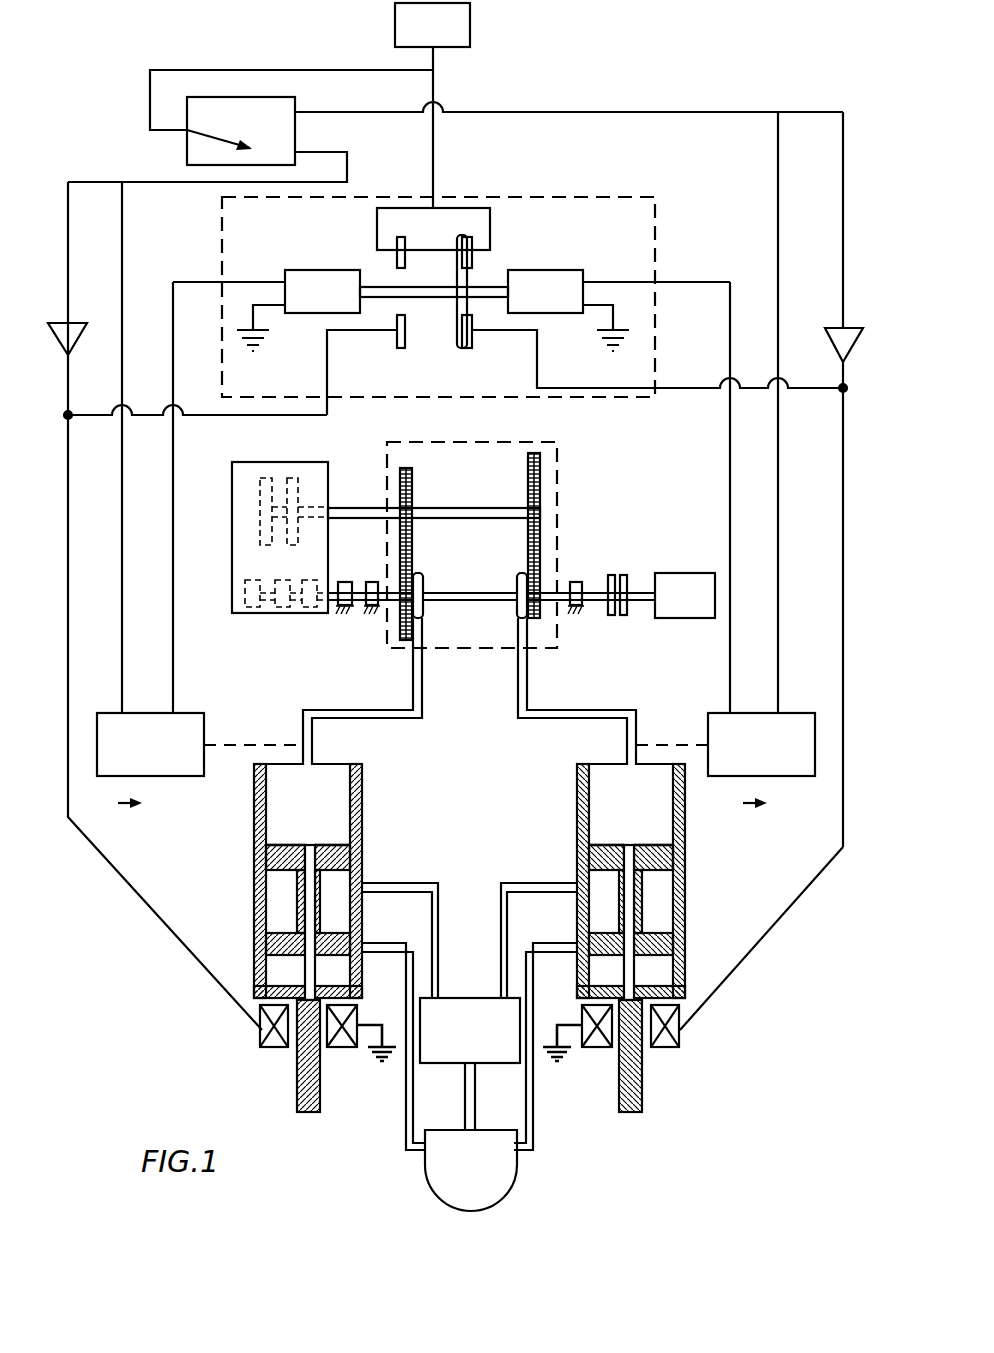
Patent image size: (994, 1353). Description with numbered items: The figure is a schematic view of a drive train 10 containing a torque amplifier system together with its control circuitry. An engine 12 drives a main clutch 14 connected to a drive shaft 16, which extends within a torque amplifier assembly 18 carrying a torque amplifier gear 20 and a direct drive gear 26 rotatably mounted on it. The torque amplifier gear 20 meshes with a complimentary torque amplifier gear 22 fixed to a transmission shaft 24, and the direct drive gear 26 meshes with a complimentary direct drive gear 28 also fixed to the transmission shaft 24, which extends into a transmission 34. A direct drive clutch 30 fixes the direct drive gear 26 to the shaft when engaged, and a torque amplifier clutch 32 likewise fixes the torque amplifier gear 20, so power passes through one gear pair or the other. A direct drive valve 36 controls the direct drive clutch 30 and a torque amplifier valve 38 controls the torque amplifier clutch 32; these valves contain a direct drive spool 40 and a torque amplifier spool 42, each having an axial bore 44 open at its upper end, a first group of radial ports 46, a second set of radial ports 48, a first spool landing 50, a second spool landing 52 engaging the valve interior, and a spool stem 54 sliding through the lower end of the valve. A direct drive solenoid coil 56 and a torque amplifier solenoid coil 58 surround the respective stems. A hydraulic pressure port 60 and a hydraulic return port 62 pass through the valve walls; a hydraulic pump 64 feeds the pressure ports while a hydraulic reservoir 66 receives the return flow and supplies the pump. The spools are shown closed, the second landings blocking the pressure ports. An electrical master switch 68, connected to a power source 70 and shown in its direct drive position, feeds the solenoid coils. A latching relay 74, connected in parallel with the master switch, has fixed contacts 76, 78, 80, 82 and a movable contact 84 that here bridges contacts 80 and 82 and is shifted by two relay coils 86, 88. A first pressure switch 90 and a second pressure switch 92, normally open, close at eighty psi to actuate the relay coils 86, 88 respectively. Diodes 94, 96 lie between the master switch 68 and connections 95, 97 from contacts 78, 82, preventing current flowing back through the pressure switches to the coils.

The drive train 10 is at (603, 460).
The engine 12 is at (688, 573).
The main clutch 14 is at (612, 575).
The drive shaft 16 is at (572, 610).
The torque amplifier assembly 18 is at (478, 442).
The torque amplifier gear 20 is at (520, 573).
The complimentary torque amplifier gear 22 is at (528, 470).
The transmission shaft 24 is at (470, 508).
The direct drive gear 26 is at (420, 573).
The complimentary direct drive gear 28 is at (403, 468).
The direct drive clutch 30 is at (423, 612).
The torque amplifier clutch 32 is at (517, 612).
The transmission 34 is at (290, 462).
The direct drive valve 36 is at (468, 955).
The torque amplifier valve 38 is at (615, 955).
The direct drive spool 40 is at (322, 825).
The torque amplifier spool 42 is at (613, 825).
The axial bore 44 is at (300, 834).
The first group of radial ports 46 is at (300, 888).
The second set of radial ports 48 is at (300, 965).
The first spool landing 50 is at (345, 850).
The second spool landing 52 is at (345, 930).
The spool stem 54 is at (297, 1100).
The direct drive solenoid coil 56 is at (260, 1030).
The torque amplifier solenoid coil 58 is at (680, 1040).
The hydraulic pressure port 60 is at (366, 948).
The hydraulic return port 62 is at (365, 882).
The hydraulic pump 64 is at (512, 1174).
The hydraulic reservoir 66 is at (465, 1070).
The electrical master switch 68 is at (243, 97).
The power source 70 is at (467, 47).
The latching relay 74 is at (455, 197).
The fixed contact 76 is at (397, 245).
The fixed contact 78 is at (397, 340).
The fixed contact 80 is at (472, 245).
The fixed contact 82 is at (472, 345).
The movable contact 84 is at (457, 245).
The relay coil 86 is at (322, 270).
The relay coil 88 is at (560, 270).
The first pressure switch 90 is at (183, 713).
The second pressure switch 92 is at (790, 713).
The diode 94 is at (72, 325).
The connection 95 is at (71, 418).
The diode 96 is at (840, 328).
The connection 97 is at (840, 390).